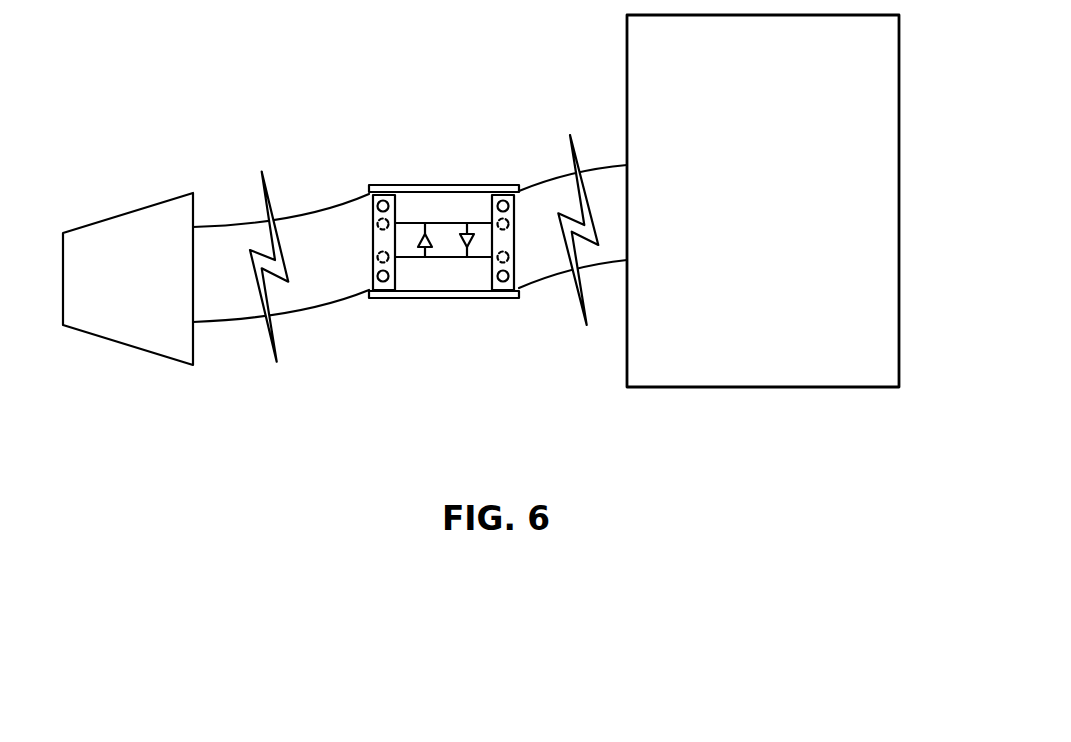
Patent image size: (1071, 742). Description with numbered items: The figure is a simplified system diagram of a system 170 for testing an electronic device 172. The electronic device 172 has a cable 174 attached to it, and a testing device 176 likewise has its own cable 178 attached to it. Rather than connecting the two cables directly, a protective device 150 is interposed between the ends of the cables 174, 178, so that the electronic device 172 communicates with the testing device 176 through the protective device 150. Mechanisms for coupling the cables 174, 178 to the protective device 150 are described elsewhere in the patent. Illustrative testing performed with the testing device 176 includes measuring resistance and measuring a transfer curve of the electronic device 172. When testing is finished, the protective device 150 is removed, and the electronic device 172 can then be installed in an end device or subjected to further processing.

The protective device 150 is at (438, 192).
The system 170 is at (276, 146).
The electronic device 172 is at (92, 222).
The cable 174 is at (227, 323).
The testing device 176 is at (627, 60).
The cable 178 is at (553, 182).